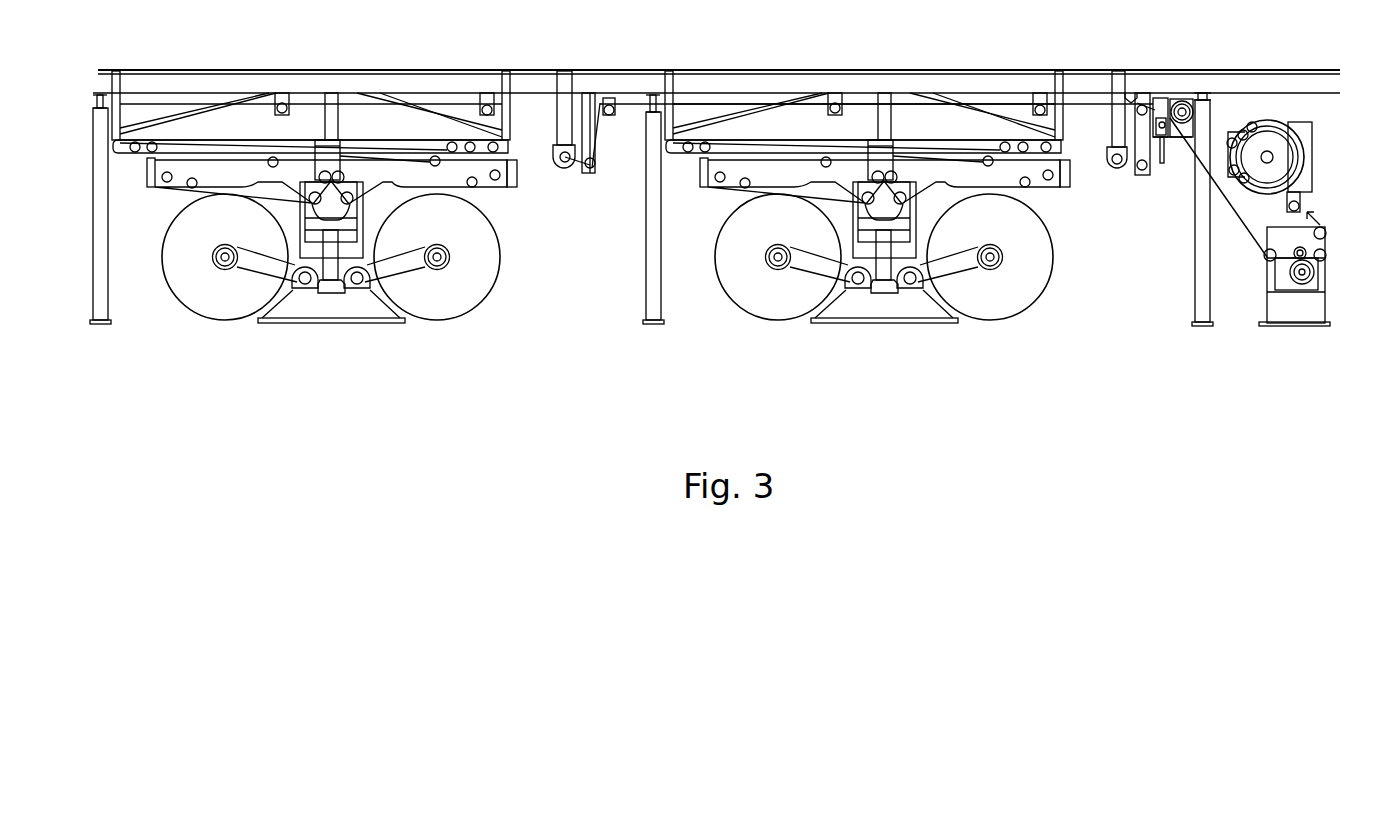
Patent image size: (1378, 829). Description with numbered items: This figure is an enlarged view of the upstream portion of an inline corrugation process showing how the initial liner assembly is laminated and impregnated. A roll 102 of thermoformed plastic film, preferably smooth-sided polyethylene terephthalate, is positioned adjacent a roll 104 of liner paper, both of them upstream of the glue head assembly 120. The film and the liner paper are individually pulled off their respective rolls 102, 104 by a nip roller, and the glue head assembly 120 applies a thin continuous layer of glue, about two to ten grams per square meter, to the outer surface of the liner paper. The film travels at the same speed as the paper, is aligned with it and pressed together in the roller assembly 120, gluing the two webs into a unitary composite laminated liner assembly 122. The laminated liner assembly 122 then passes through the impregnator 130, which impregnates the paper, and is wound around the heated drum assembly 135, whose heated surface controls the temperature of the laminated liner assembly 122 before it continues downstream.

The roll of thermoformed plastic film 102 is at (226, 298).
The roll of liner paper 104 is at (856, 221).
The glue head assembly 120 is at (1162, 98).
The laminated liner assembly 122 is at (1206, 152).
The heated drum assembly 135 is at (1270, 125).
The impregnator 130 is at (1284, 308).